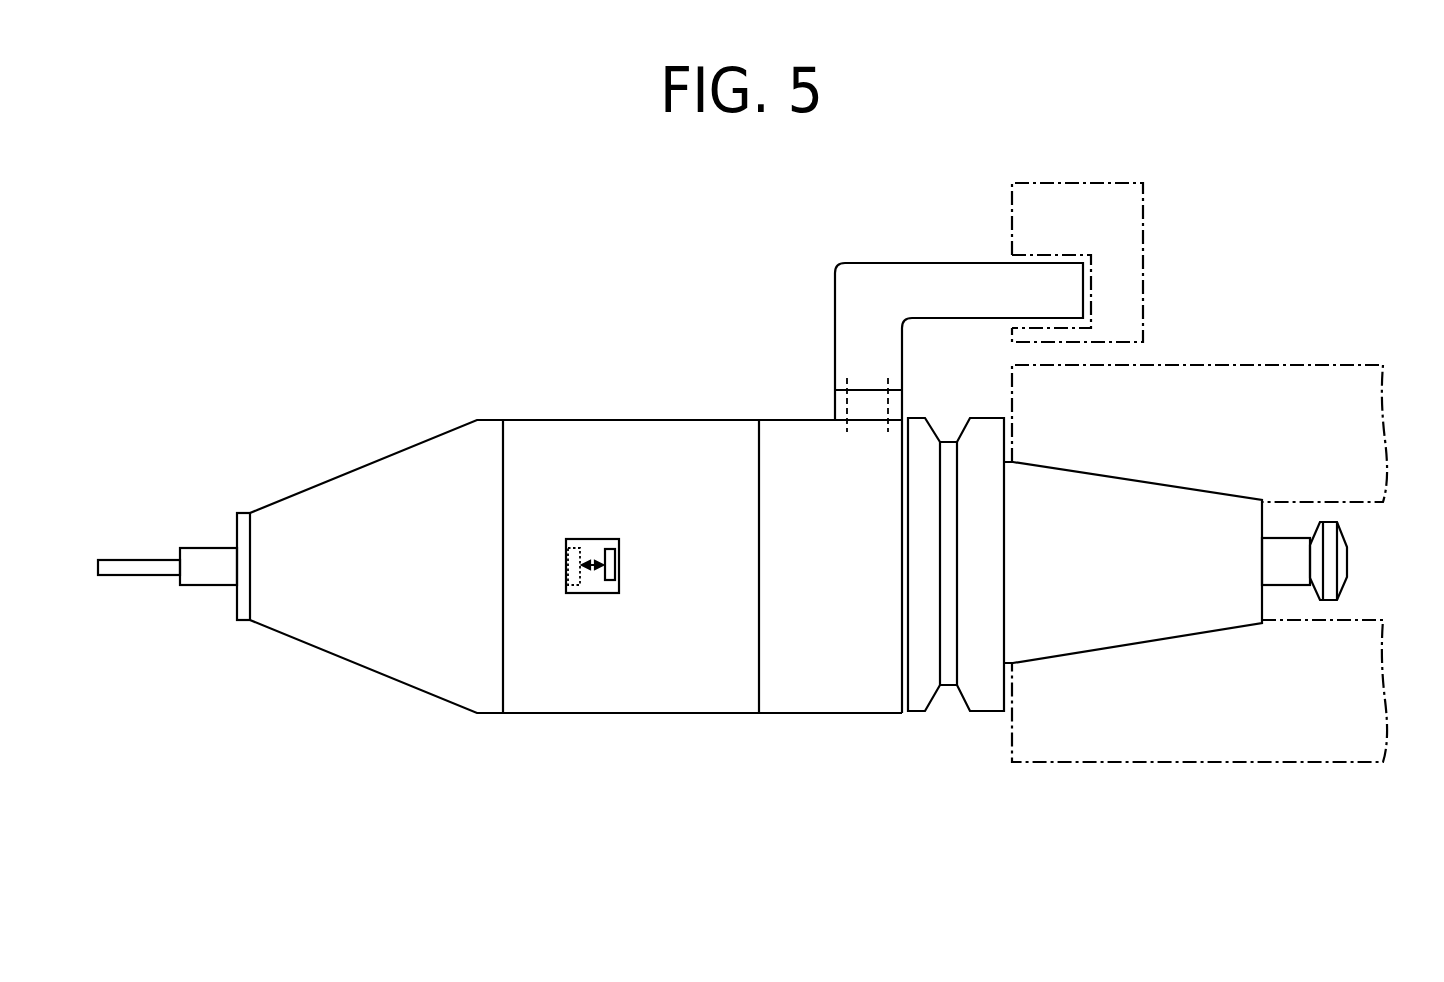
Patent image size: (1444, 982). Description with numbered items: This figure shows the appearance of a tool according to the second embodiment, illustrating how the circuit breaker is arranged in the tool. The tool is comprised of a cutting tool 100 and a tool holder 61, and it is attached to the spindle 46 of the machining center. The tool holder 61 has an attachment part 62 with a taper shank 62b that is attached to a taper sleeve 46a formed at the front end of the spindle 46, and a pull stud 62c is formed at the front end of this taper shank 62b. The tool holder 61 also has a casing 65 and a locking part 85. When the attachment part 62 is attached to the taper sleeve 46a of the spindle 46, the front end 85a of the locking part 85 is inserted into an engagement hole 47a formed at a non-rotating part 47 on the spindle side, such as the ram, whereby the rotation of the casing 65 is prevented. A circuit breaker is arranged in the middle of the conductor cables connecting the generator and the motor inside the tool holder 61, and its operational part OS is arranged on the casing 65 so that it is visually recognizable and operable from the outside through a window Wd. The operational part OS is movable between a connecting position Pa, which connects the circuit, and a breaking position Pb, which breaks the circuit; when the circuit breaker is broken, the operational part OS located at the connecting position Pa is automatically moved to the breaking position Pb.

The cutting tool 100 is at (122, 580).
The casing 65 is at (730, 700).
The window Wd is at (566, 555).
The operational part OS is at (612, 540).
The breaking position Pb is at (574, 597).
The connecting position Pa is at (607, 597).
The locking part 85 is at (935, 281).
The front end of locking part 85a is at (1058, 275).
The non-rotating part 47 is at (1150, 244).
The engagement hole 47a is at (1093, 300).
The tool holder 61 is at (910, 738).
The attachment part 62 is at (982, 698).
The taper shank 62b is at (1098, 660).
The pull stud 62c is at (1330, 572).
The spindle 46 is at (1252, 765).
The taper sleeve 46a is at (1180, 636).